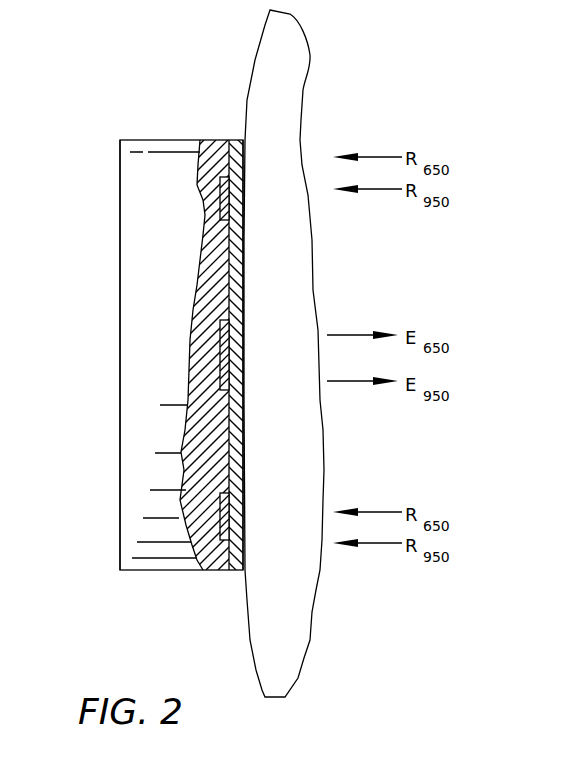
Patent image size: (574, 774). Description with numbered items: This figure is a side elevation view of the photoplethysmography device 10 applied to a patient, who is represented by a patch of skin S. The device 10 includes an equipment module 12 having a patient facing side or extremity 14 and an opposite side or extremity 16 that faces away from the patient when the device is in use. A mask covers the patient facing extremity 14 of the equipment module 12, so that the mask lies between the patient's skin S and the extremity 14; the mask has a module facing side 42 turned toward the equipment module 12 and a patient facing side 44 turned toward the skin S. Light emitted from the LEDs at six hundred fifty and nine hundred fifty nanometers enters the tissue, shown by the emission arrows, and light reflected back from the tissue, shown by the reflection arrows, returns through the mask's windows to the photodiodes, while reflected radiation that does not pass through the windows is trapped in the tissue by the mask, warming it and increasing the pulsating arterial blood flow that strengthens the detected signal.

The photoplethysmography (PPG) device 10 is at (93, 596).
The equipment module 12 is at (158, 178).
The patient facing side or extremity 14 is at (243, 250).
The opposite side or extremity 16 is at (120, 378).
The module facing side 42 is at (181, 453).
The patient facing side 44 is at (243, 315).
The skin S is at (250, 96).